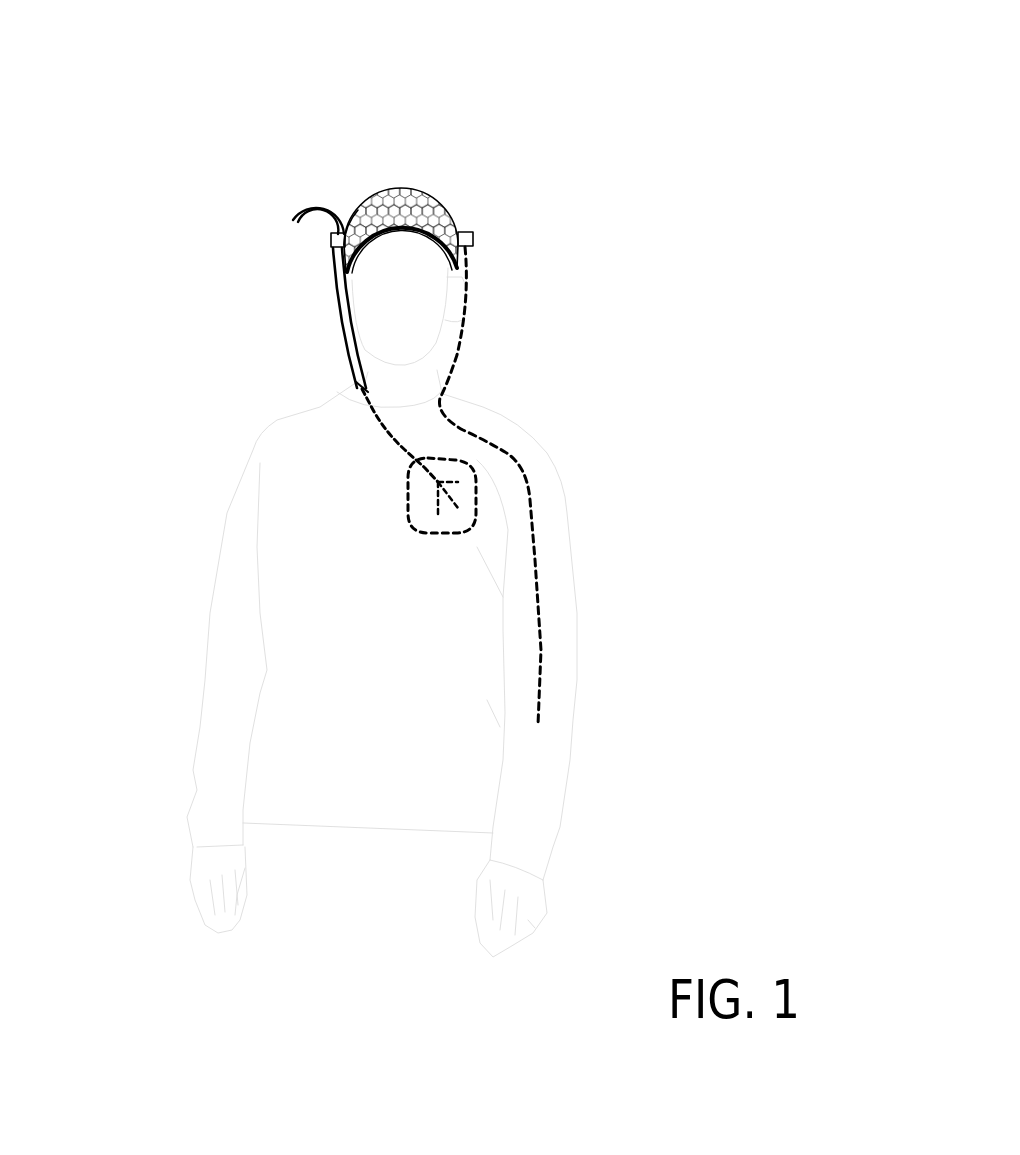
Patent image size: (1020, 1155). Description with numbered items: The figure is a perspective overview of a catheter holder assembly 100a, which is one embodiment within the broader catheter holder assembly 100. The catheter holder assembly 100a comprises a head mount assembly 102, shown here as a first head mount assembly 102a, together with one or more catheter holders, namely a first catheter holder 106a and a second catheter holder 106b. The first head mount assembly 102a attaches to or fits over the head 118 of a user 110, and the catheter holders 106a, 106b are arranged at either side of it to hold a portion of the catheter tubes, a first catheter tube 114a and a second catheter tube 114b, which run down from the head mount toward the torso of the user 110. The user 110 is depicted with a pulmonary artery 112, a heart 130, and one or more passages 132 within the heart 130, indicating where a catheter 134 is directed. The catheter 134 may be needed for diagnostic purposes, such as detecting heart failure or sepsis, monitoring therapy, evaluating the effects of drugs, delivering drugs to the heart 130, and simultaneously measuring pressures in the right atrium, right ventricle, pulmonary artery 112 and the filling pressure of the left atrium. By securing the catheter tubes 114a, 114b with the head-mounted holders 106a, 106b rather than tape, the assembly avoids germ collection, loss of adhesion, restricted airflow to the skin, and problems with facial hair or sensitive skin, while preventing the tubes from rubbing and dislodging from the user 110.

The catheter holder assembly 100 is at (478, 72).
The catheter holder assembly 100a is at (440, 368).
The head mount assembly 102 is at (500, 189).
The first head mount assembly 102a is at (440, 202).
The first catheter holder 106a is at (293, 222).
The second catheter holder 106b is at (473, 247).
The user 110 is at (195, 740).
The pulmonary artery 112 is at (373, 417).
The first catheter tube 114a is at (355, 357).
The second catheter tube 114b is at (462, 347).
The head 118 is at (357, 210).
The heart 130 is at (409, 497).
The passages 132 is at (438, 482).
The catheter 134 is at (362, 380).